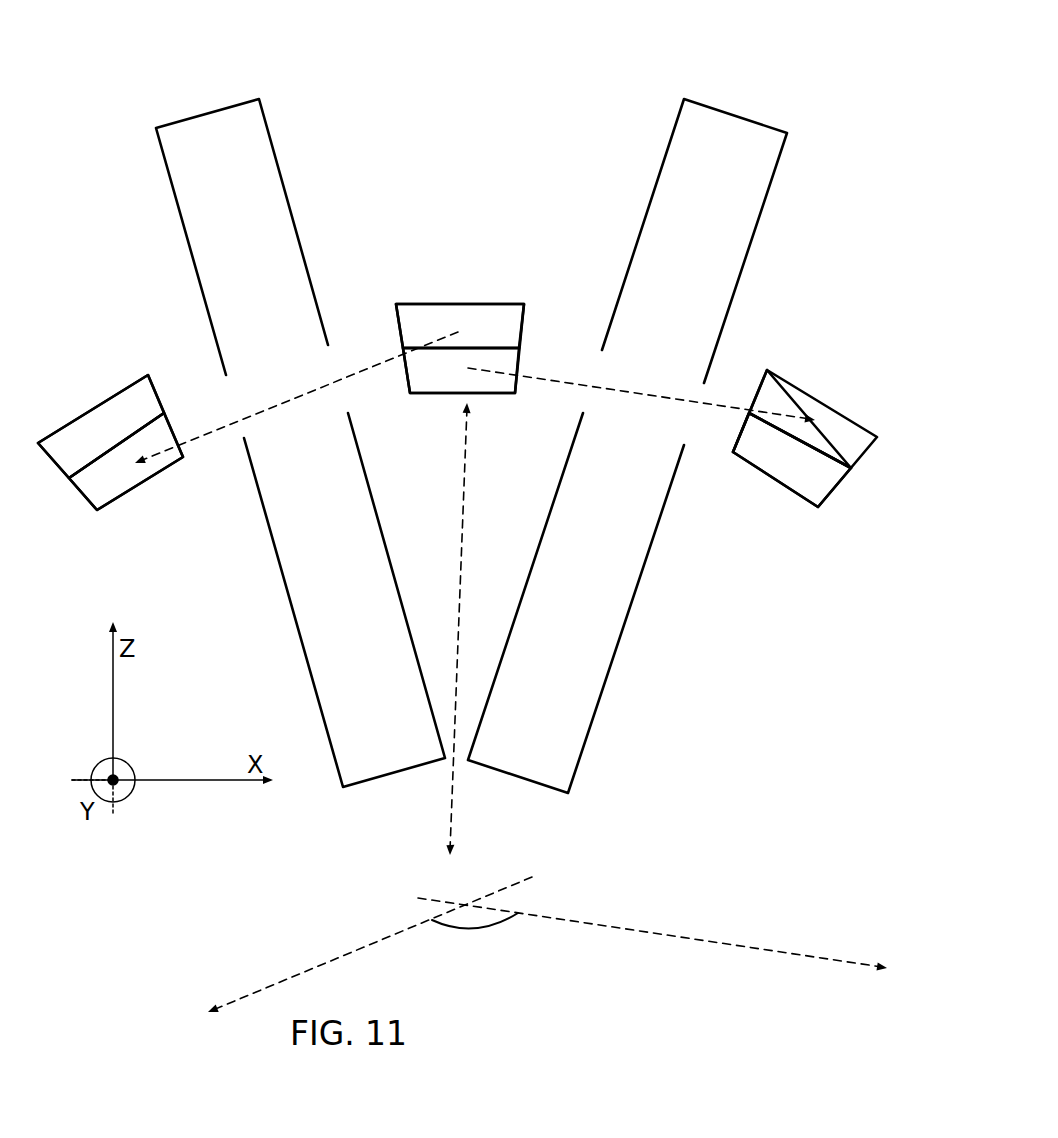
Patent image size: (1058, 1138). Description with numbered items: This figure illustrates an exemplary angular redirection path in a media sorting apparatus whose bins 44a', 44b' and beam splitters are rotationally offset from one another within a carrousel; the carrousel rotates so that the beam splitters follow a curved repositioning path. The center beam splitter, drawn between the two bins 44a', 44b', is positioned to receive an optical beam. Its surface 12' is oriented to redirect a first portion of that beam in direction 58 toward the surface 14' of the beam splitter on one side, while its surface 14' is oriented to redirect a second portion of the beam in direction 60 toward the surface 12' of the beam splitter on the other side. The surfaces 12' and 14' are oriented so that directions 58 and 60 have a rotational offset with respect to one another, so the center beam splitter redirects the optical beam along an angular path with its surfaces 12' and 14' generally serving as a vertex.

The bin 44a' is at (296, 407).
The bin 44b' is at (627, 410).
The surface 14' is at (447, 391).
The surface 12' is at (460, 429).
The direction 60 is at (243, 420).
The direction 58 is at (602, 387).